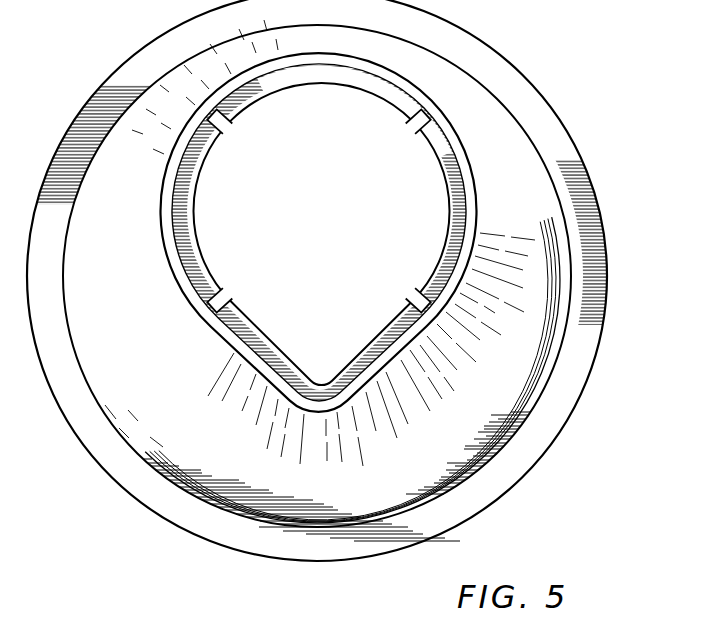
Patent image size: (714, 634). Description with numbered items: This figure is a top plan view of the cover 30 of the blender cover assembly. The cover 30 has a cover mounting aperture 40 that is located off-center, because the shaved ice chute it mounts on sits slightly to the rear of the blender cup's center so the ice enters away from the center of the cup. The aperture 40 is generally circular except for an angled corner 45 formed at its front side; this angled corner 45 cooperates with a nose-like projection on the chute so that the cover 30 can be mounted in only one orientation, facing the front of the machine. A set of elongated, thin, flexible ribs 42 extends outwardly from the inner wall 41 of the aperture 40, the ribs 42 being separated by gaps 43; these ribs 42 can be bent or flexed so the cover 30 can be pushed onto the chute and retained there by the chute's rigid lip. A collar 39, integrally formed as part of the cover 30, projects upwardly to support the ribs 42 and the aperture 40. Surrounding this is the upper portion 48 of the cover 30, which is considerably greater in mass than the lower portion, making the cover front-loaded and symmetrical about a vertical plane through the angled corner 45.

The cover 30 is at (560, 460).
The collar 39 is at (473, 170).
The cover mounting aperture 40 is at (380, 267).
The inner wall 41 is at (453, 207).
The flexible ribs 42 is at (387, 342).
The gaps 43 is at (432, 118).
The angled corner 45 is at (318, 374).
The upper portion 48 is at (204, 402).